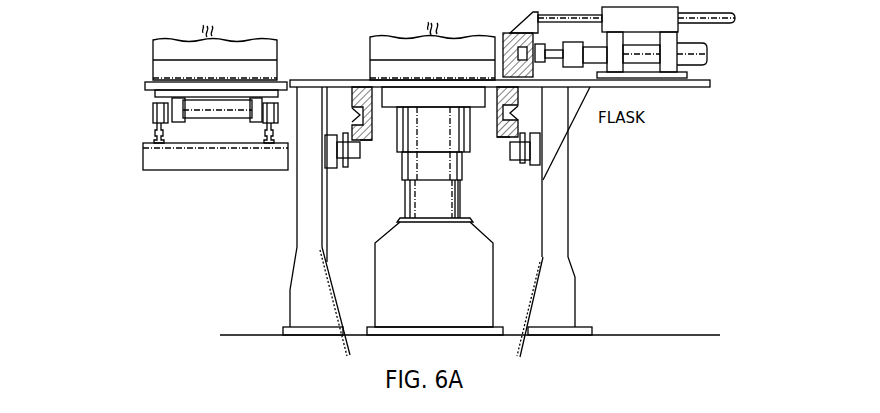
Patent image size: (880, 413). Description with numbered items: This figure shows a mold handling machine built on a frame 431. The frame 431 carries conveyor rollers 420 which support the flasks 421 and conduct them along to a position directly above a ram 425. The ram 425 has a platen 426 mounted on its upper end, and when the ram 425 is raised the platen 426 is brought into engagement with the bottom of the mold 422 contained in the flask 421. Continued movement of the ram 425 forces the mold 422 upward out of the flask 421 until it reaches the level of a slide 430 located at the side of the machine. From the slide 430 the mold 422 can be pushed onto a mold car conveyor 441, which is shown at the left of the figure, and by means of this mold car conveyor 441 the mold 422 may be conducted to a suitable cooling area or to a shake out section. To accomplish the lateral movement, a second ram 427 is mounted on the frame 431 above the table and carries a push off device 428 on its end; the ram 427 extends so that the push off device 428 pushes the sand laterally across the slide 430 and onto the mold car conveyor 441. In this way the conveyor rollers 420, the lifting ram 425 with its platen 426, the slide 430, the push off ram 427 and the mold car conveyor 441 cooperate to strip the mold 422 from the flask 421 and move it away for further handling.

The conveyor rollers 420 is at (517, 146).
The flask 421 is at (513, 112).
The mold 422 is at (467, 45).
The ram 425 is at (452, 200).
The platen 426 is at (420, 82).
The ram 427 is at (703, 54).
The push off device 428 is at (510, 48).
The slide 430 is at (307, 80).
The frame 431 is at (557, 200).
The mold car conveyor 441 is at (147, 87).